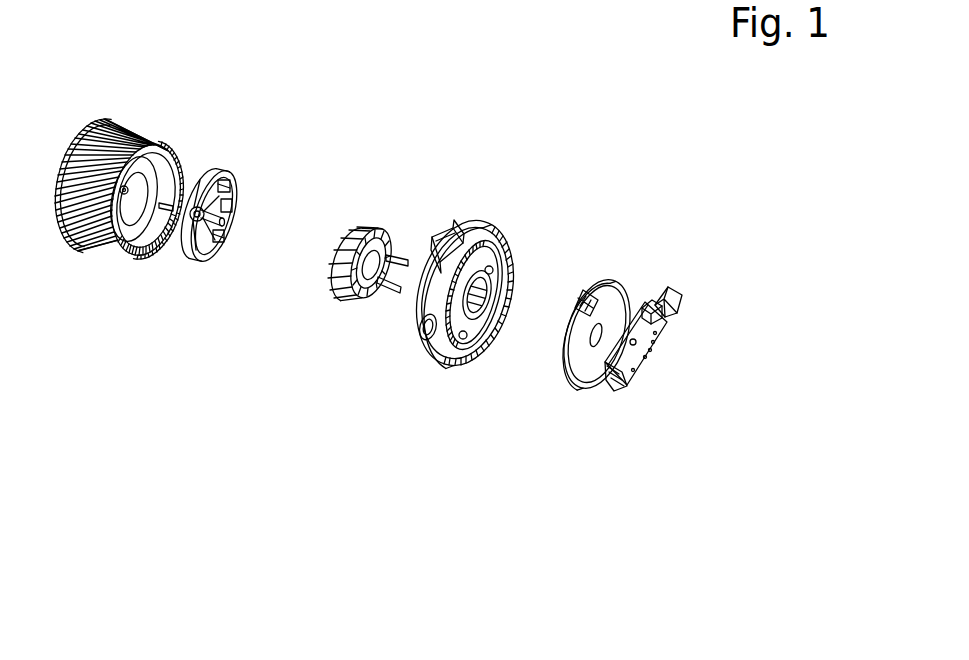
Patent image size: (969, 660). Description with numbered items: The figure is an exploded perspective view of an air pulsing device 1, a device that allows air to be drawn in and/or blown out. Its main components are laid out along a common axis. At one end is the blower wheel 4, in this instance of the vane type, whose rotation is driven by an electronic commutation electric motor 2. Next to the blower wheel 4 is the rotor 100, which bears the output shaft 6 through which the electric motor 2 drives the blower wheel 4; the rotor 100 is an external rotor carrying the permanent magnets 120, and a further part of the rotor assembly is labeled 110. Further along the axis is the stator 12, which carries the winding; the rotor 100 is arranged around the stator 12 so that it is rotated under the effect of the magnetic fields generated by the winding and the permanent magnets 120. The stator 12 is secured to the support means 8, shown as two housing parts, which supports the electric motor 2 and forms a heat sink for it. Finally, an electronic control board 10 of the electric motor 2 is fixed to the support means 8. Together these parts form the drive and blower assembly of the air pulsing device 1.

The air pulsing device 1 is at (490, 462).
The electronic commutation electric motor 2 is at (266, 338).
The blower wheel 4 is at (118, 140).
The output shaft 6 is at (235, 190).
The support means 8 is at (487, 208).
The electronic control board 10 is at (646, 385).
The stator 12 is at (374, 212).
The rotor 100 is at (192, 283).
The fan wheel rim 110 is at (173, 252).
The permanent magnets 120 is at (226, 186).